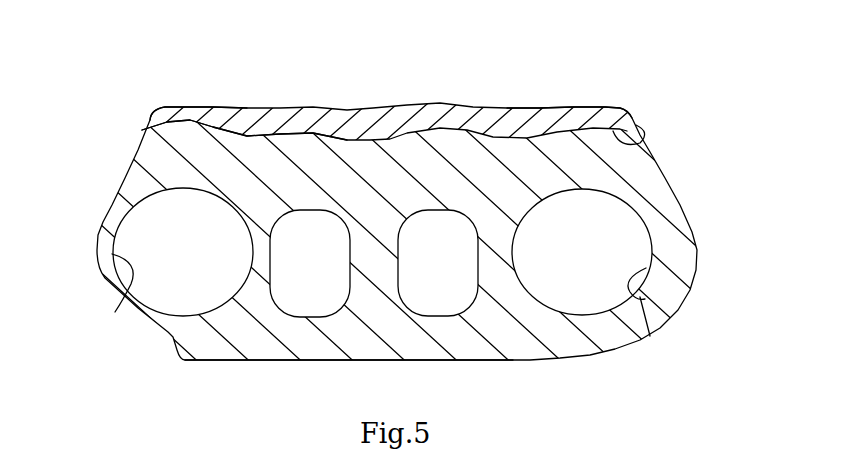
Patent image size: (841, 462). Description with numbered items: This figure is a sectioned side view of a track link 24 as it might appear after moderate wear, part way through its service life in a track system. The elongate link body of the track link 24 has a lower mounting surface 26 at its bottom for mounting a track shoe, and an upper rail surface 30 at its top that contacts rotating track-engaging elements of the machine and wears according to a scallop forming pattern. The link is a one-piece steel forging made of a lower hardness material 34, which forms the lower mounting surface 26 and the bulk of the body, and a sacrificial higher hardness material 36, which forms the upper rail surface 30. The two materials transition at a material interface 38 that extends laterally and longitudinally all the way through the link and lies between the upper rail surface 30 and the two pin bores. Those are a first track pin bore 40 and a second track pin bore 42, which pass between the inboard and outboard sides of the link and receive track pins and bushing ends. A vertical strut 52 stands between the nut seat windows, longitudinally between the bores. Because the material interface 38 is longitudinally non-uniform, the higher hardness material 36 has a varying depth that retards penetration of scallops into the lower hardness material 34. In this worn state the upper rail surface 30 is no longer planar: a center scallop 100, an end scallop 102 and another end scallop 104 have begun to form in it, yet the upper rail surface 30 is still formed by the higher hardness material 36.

The track link 24 is at (694, 222).
The lower mounting surface 26 is at (311, 360).
The upper rail surface 30 is at (187, 107).
The lower hardness material 34 is at (482, 137).
The higher hardness material 36 is at (597, 107).
The material interface 38 is at (640, 143).
The first track pin bore 40 is at (115, 312).
The second track pin bore 42 is at (650, 336).
The vertical strut 52 is at (359, 254).
The center scallop 100 is at (403, 108).
The end scallop 102 is at (547, 107).
The end scallop 104 is at (260, 107).